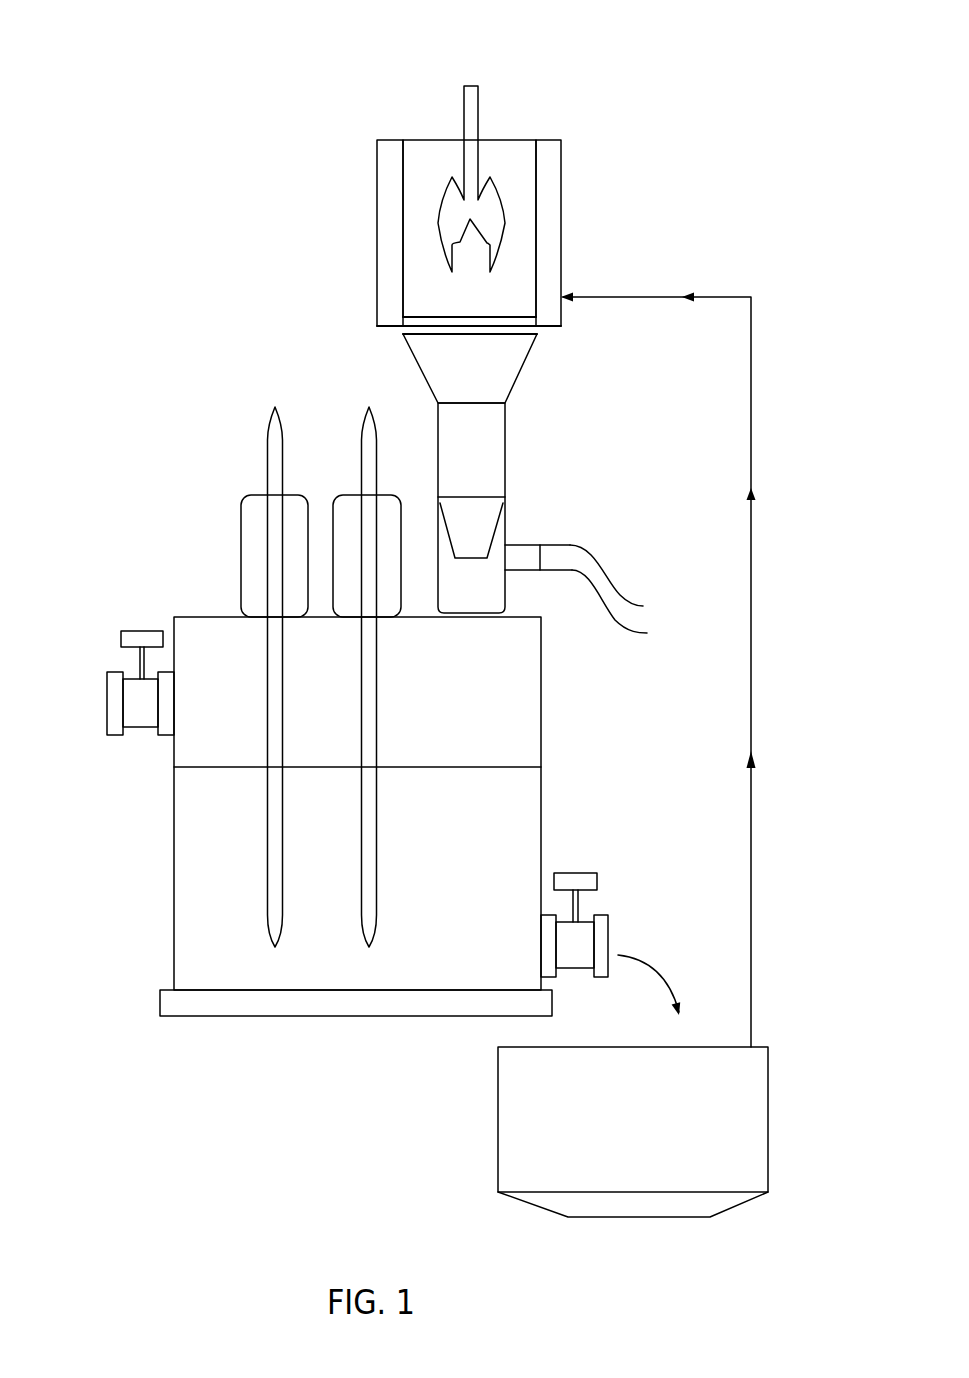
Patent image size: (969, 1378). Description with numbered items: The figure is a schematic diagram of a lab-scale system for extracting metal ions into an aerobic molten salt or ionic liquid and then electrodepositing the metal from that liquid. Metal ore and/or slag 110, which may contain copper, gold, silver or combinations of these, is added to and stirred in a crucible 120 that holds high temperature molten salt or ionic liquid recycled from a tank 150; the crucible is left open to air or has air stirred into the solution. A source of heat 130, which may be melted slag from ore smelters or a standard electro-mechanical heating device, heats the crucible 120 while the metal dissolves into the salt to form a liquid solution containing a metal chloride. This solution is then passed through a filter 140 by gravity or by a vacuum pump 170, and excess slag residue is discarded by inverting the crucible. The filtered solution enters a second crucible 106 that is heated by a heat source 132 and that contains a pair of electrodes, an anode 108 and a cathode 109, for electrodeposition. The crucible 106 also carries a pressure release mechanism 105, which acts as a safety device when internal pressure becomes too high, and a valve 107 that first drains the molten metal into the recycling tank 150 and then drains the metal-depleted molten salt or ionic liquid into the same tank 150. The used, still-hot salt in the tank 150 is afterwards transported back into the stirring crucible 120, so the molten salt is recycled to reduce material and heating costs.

The metal ore and/or slag 110 is at (365, 100).
The crucible 120 is at (512, 152).
The source of heat 130 is at (367, 218).
The filter 140 is at (537, 328).
The vacuum pump 170 is at (638, 622).
The crucible 106 is at (202, 866).
The electrode (anode) 108 is at (276, 475).
The electrode (cathode) 109 is at (370, 475).
The pressure release mechanism 105 is at (117, 722).
The valve 107 is at (597, 929).
The heat source 132 is at (188, 1027).
The recycling tank 150 is at (517, 1165).